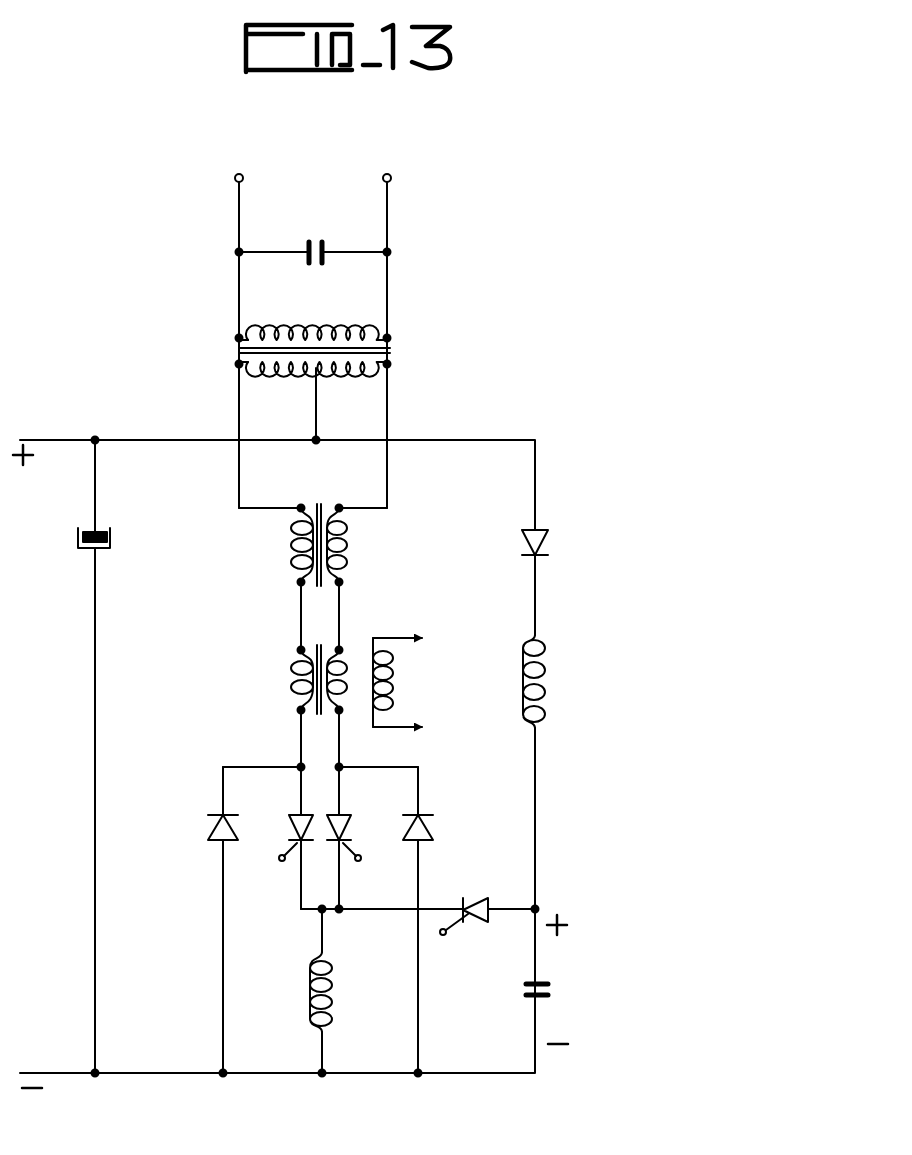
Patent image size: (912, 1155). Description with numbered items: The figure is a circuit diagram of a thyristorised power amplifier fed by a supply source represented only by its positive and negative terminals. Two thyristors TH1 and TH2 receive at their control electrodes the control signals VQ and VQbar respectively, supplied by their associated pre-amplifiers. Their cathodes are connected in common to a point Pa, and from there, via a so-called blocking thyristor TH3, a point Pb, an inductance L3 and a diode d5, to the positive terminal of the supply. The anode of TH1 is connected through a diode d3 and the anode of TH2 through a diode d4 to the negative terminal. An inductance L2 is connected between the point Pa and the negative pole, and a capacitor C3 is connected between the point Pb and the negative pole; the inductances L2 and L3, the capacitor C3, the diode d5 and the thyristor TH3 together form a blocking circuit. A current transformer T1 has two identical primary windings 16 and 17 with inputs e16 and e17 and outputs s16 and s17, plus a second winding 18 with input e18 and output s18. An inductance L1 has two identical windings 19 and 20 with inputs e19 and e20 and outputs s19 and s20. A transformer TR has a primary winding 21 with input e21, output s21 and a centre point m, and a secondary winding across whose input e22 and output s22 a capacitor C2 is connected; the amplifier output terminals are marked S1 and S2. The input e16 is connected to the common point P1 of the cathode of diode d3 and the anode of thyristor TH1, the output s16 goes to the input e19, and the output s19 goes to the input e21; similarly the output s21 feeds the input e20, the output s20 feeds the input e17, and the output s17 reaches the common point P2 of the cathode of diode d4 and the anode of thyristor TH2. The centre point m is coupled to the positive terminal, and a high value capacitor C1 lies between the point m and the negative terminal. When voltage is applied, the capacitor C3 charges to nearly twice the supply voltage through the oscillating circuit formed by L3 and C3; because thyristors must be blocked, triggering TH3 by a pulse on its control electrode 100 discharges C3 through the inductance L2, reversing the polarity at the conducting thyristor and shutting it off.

The output terminal S1 is at (242, 320).
The output terminal S2 is at (385, 320).
The capacitor C2 is at (306, 244).
The transformer TR is at (390, 350).
The input of secondary winding 22 e22 is at (239, 336).
The output of secondary winding 22 s22 is at (390, 334).
The input of primary winding 21 e21 is at (239, 366).
The output of primary winding 21 s21 is at (390, 364).
The primary winding 21 is at (287, 372).
The centre point m is at (316, 440).
The high value capacitor C1 is at (110, 539).
The inductance L1 is at (290, 535).
The winding 19 is at (290, 560).
The winding 20 is at (350, 540).
The output of winding 19 s19 is at (301, 508).
The input of winding 20 e20 is at (339, 508).
The output of winding 20 s20 is at (345, 580).
The input of winding 19 e19 is at (300, 586).
The current transformer T1 is at (290, 676).
The input of primary winding 17 e17 is at (339, 650).
The output of primary winding 16 s16 is at (300, 650).
The primary winding 16 is at (300, 708).
The input of primary winding 16 e16 is at (301, 712).
The primary winding 17 is at (339, 712).
The output of primary winding 17 s17 is at (339, 712).
The second winding 18 is at (394, 682).
The input of second winding 18 e18 is at (454, 634).
The output of second winding 18 s18 is at (457, 723).
The common point P1 is at (300, 769).
The common point P2 is at (340, 769).
The diode d3 is at (206, 828).
The thyristor TH1 is at (278, 838).
The thyristor TH2 is at (367, 838).
The diode d4 is at (433, 830).
The control signal VQ is at (280, 880).
The control signal VQbar is at (360, 866).
The point Pa is at (322, 909).
The inductance L2 is at (336, 1000).
The blocking thyristor TH3 is at (474, 900).
The control electrode 100 is at (443, 936).
The point Pb is at (535, 909).
The capacitor C3 is at (548, 996).
The diode d5 is at (548, 546).
The inductance L3 is at (553, 682).